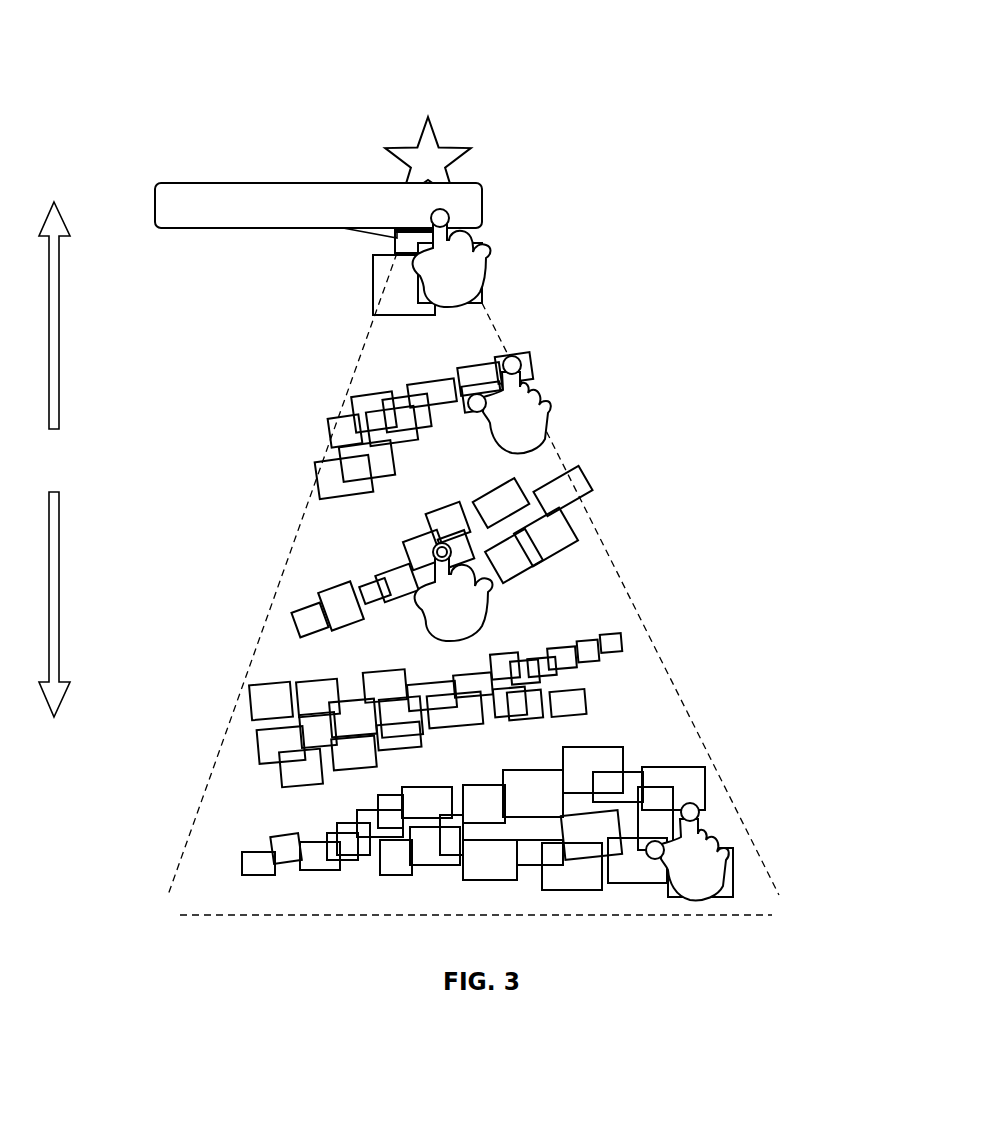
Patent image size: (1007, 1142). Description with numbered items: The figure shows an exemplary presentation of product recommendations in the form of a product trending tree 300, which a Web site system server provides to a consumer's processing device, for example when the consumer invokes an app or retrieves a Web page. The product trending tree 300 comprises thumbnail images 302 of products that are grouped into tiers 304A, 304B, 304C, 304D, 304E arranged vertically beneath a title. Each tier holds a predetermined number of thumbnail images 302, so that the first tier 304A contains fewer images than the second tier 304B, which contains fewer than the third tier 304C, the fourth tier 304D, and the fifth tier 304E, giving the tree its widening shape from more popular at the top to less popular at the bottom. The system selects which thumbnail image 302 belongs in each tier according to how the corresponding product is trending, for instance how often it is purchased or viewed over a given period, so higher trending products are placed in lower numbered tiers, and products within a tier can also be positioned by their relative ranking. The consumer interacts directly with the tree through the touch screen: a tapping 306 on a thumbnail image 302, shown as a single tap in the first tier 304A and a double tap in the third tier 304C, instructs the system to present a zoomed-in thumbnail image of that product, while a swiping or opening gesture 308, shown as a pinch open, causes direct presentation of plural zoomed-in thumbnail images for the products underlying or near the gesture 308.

The product trending tree 300 is at (624, 50).
The thumbnail image 302 is at (333, 475).
The first tier 304A is at (603, 238).
The second tier 304B is at (661, 357).
The third tier 304C is at (708, 505).
The fourth tier 304D is at (766, 640).
The fifth tier 304E is at (818, 755).
The tapping 306 is at (438, 280).
The opening gesture 308 is at (527, 418).